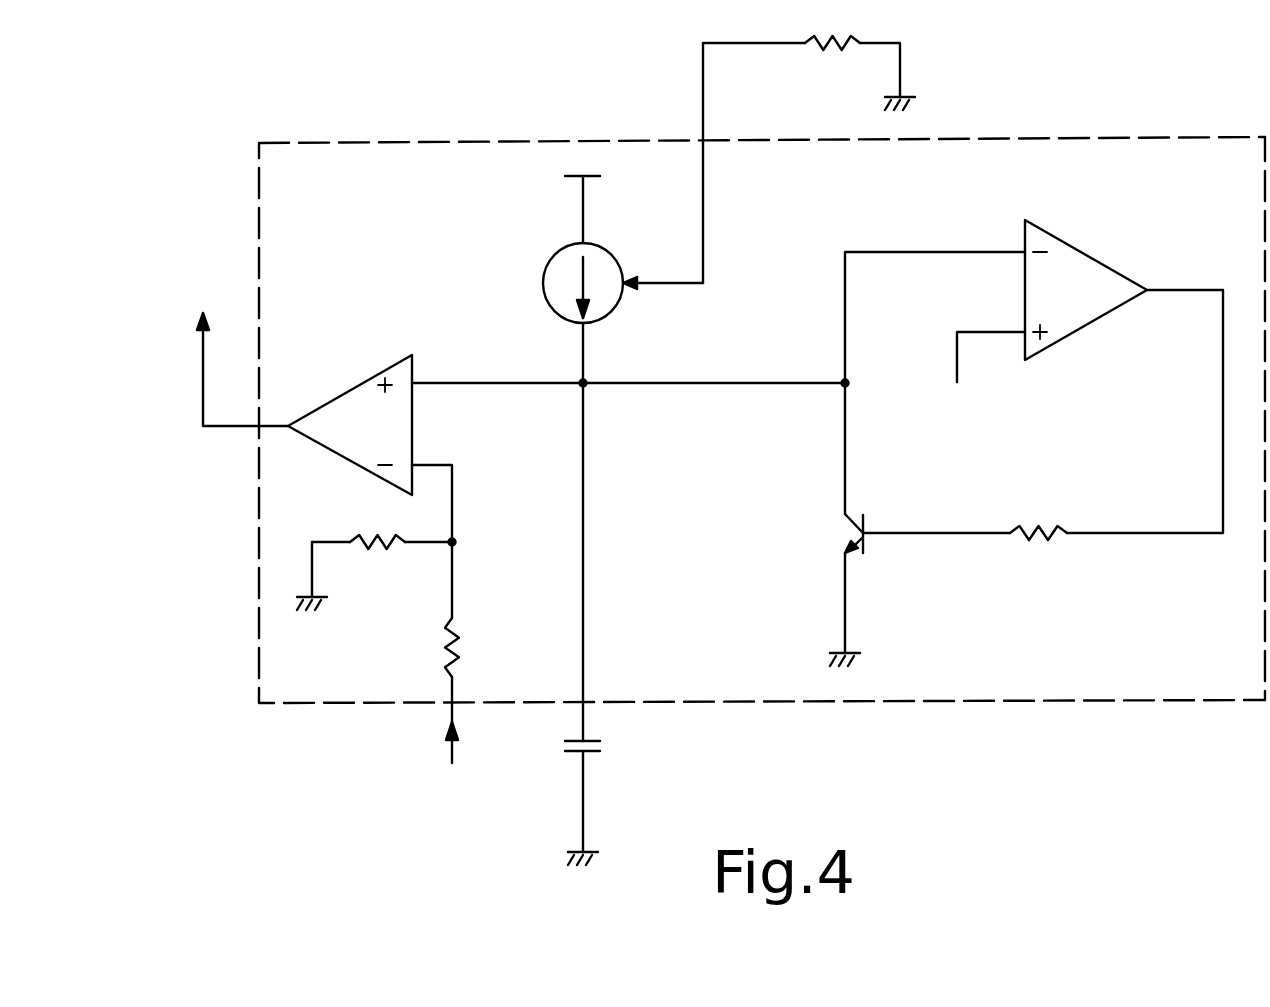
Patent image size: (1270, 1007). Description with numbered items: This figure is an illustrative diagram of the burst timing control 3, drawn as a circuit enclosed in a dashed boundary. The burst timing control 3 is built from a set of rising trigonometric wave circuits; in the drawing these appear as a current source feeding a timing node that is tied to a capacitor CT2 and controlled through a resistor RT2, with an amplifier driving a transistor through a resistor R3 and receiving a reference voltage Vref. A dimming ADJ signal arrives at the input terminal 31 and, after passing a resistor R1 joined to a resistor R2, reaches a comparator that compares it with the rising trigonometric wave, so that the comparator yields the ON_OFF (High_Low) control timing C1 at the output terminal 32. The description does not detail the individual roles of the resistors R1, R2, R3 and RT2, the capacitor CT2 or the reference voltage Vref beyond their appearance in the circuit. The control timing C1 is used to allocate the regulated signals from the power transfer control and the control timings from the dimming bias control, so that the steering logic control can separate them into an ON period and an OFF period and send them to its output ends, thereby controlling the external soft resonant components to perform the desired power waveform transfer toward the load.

The burst timing control 3 is at (1206, 153).
The input terminal 31 is at (450, 750).
The output terminal 32 is at (203, 391).
The resistor RT2 is at (809, 145).
The capacitor CT2 is at (610, 798).
The resistor R1 is at (430, 622).
The resistor R2 is at (374, 556).
The resistor R3 is at (1043, 437).
The control timing C1 is at (202, 295).
The reference voltage Vref is at (971, 381).